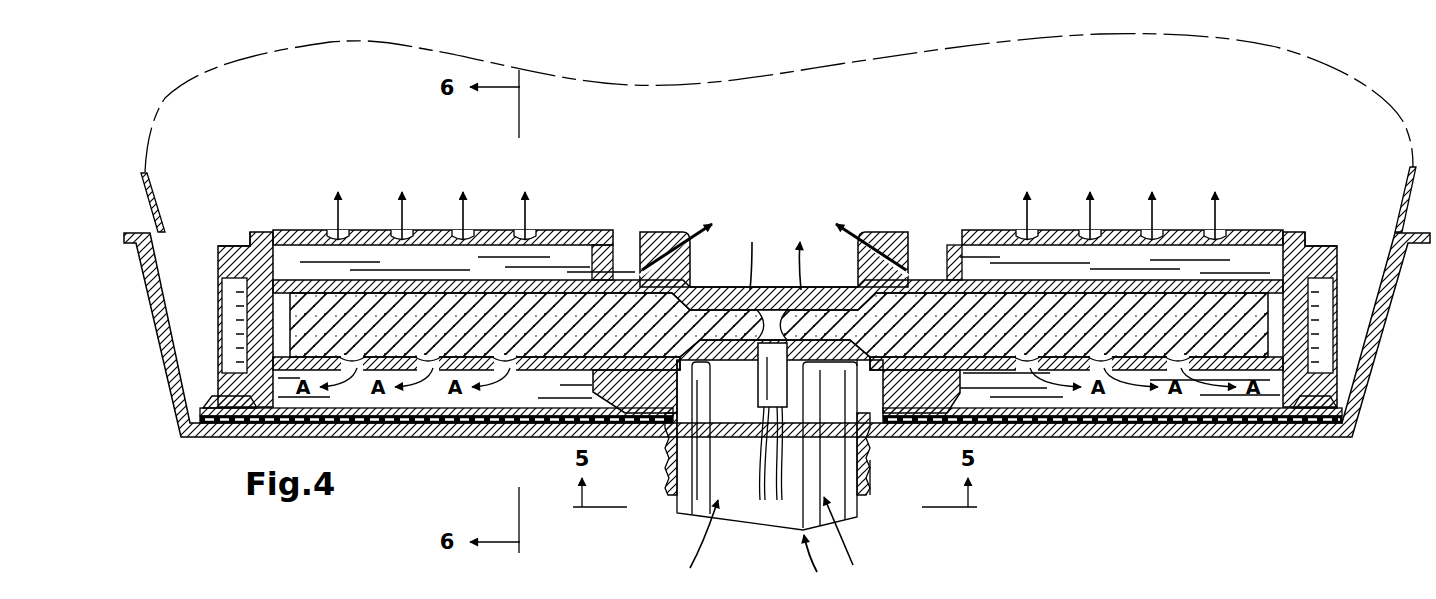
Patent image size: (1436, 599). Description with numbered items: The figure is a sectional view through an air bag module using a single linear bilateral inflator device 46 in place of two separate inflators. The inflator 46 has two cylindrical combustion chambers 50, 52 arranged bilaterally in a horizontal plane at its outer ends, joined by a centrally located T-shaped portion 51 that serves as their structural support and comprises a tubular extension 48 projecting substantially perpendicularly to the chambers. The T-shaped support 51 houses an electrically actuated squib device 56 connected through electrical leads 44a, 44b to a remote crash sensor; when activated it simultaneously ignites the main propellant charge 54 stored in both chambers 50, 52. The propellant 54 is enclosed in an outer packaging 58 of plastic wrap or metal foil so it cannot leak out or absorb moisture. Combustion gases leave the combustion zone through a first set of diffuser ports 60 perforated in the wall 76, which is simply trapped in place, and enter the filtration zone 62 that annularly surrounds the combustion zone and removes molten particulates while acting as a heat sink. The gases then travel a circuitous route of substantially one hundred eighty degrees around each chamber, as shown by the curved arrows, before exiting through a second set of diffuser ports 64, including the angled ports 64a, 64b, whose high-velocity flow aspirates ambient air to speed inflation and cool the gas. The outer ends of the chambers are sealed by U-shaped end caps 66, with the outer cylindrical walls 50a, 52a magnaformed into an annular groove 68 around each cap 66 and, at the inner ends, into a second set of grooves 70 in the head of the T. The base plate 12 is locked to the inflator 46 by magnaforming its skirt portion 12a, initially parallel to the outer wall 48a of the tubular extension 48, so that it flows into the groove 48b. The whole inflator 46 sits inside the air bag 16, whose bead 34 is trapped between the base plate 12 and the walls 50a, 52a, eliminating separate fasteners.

The base plate 12 is at (150, 268).
The skirt portion 12a is at (871, 487).
The air bag 16 is at (141, 176).
The bead 34 is at (670, 437).
The electrical lead 44a is at (762, 452).
The electrical lead 44b is at (790, 458).
The linear bilateral inflator device 46 is at (765, 188).
The tubular extension 48 is at (767, 477).
The outer wall 48a is at (670, 487).
The groove 48b is at (857, 503).
The first combustion chamber 50 is at (578, 226).
The outer cylindrical wall 50a is at (247, 232).
The T-shaped portion 51 is at (785, 228).
The second combustion chamber 52 is at (963, 226).
The outer cylindrical wall 52a is at (1312, 230).
The main propellant charge 54 is at (405, 338).
The squib device 56 is at (758, 383).
The outer packaging 58 is at (240, 270).
The first set of diffuser ports 60 is at (512, 370).
The filtration zone 62 is at (370, 262).
The second set of diffuser ports 64 is at (513, 230).
The angled port 64a is at (696, 230).
The angled port 64b is at (880, 236).
The end cap 66 is at (262, 327).
The annular groove 68 is at (237, 396).
The second set of grooves 70 is at (610, 402).
The wall 76 is at (1037, 284).